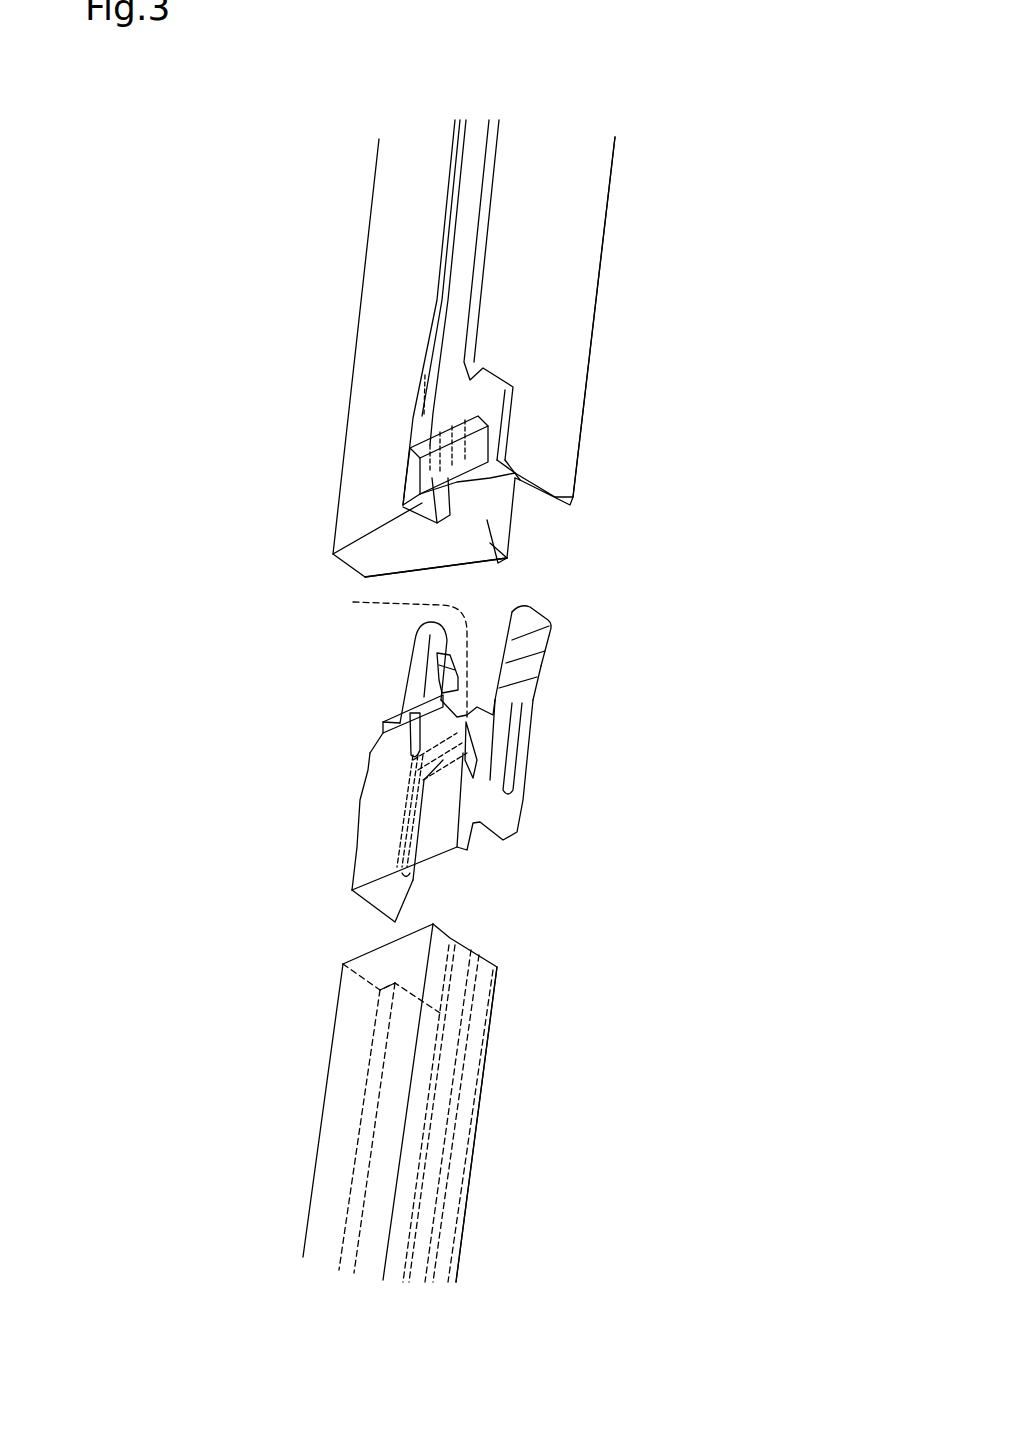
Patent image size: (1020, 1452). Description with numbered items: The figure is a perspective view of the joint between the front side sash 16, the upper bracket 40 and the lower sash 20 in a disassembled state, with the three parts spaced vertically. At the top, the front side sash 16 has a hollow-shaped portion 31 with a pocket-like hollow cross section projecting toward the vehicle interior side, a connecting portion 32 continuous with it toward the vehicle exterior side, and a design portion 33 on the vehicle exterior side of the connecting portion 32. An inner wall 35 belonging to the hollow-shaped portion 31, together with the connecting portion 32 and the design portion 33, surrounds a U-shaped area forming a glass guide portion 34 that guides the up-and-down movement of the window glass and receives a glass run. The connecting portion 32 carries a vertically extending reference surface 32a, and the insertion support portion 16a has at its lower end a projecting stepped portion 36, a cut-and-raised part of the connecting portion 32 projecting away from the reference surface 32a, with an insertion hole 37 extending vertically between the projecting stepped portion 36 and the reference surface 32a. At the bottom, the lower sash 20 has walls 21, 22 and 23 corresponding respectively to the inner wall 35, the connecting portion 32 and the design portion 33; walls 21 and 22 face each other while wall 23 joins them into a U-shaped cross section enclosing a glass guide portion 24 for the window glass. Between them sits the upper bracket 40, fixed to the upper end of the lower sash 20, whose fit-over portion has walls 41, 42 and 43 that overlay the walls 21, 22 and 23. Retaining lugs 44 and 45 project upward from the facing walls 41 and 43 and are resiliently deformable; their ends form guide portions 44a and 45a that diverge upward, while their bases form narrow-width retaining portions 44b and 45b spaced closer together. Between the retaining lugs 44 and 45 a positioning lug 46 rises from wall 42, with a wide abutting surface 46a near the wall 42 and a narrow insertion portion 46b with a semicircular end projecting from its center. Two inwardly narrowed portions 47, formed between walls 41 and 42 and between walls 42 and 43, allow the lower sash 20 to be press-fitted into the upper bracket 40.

The front side sash 16 is at (610, 223).
The insertion support portion 16a is at (594, 317).
The lower sash 20 is at (487, 1092).
The wall 21 is at (343, 1085).
The wall 22 is at (338, 1173).
The wall 23 is at (465, 1058).
The glass guide portion 24 is at (412, 992).
The hollow-shaped portion 31 is at (363, 433).
The connecting portion 32 is at (500, 403).
The reference surface 32a is at (450, 400).
The design portion 33 is at (562, 345).
The glass guide portion 34 is at (528, 517).
The inner wall 35 is at (488, 520).
The projecting stepped portion 36 is at (443, 467).
The insertion hole 37 is at (450, 490).
The upper bracket 40 is at (530, 783).
The wall 41 is at (380, 888).
The wall 42 is at (372, 847).
The wall 43 is at (507, 815).
The retaining lug 44 is at (366, 656).
The guide portion 44a is at (428, 622).
The narrow-width retaining portion 44b is at (306, 640).
The retaining lug 45 is at (598, 653).
The guide portion 45a is at (548, 628).
The narrow-width retaining portion 45b is at (540, 695).
The positioning lug 46 is at (358, 705).
The abutting surface 46a is at (390, 715).
The insertion portion 46b is at (413, 653).
The inwardly narrowed portion 47 is at (478, 752).